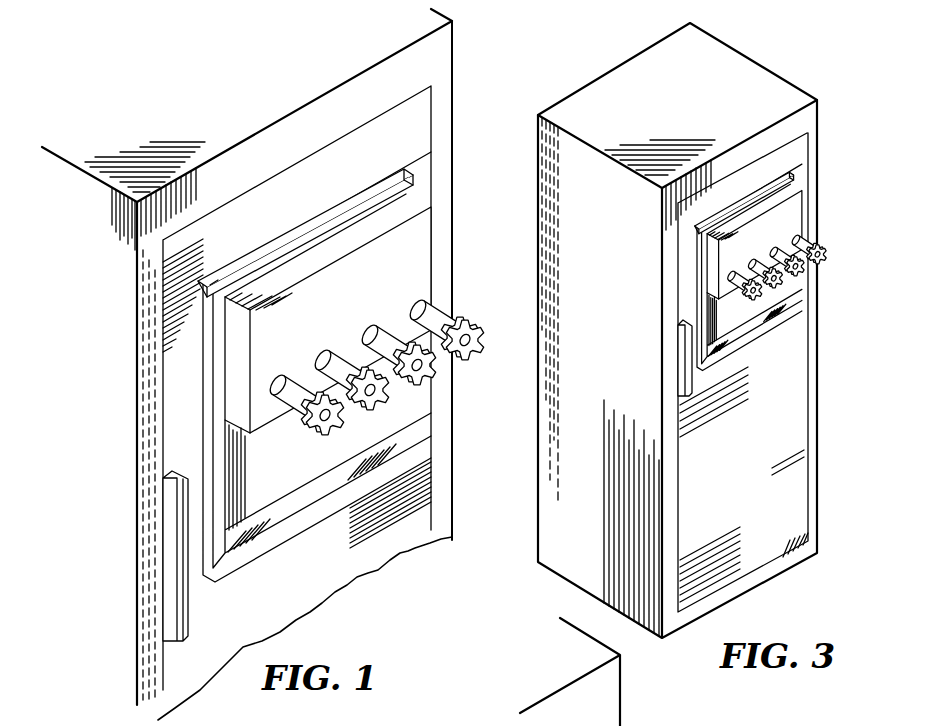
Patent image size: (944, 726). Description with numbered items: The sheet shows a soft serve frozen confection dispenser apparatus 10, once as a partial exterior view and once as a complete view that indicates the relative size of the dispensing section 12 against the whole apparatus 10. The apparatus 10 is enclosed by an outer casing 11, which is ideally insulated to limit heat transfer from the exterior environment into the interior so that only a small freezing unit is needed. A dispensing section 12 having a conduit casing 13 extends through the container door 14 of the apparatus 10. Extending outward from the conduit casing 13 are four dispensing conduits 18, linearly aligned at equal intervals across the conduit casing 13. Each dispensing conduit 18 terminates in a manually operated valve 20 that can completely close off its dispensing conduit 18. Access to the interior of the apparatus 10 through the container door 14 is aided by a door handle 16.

In FIG. 1, the soft serve frozen confection dispenser apparatus 10 is at (137, 128).
In FIG. 3, the soft serve frozen confection dispenser apparatus 10 is at (566, 94).
In FIG. 3, the outer casing 11 is at (786, 93).
In FIG. 1, the dispensing section 12 is at (415, 264).
In FIG. 3, the dispensing section 12 is at (780, 228).
In FIG. 1, the conduit casing 13 is at (412, 203).
In FIG. 3, the conduit casing 13 is at (798, 184).
In FIG. 1, the container door 14 is at (327, 558).
In FIG. 3, the container door 14 is at (767, 448).
In FIG. 1, the door handle 16 is at (193, 606).
In FIG. 3, the door handle 16 is at (694, 381).
In FIG. 1, the dispensing conduit 18 is at (428, 312).
In FIG. 3, the dispensing conduit 18 is at (815, 238).
In FIG. 1, the manually operated valve 20 is at (468, 322).
In FIG. 3, the manually operated valve 20 is at (829, 265).